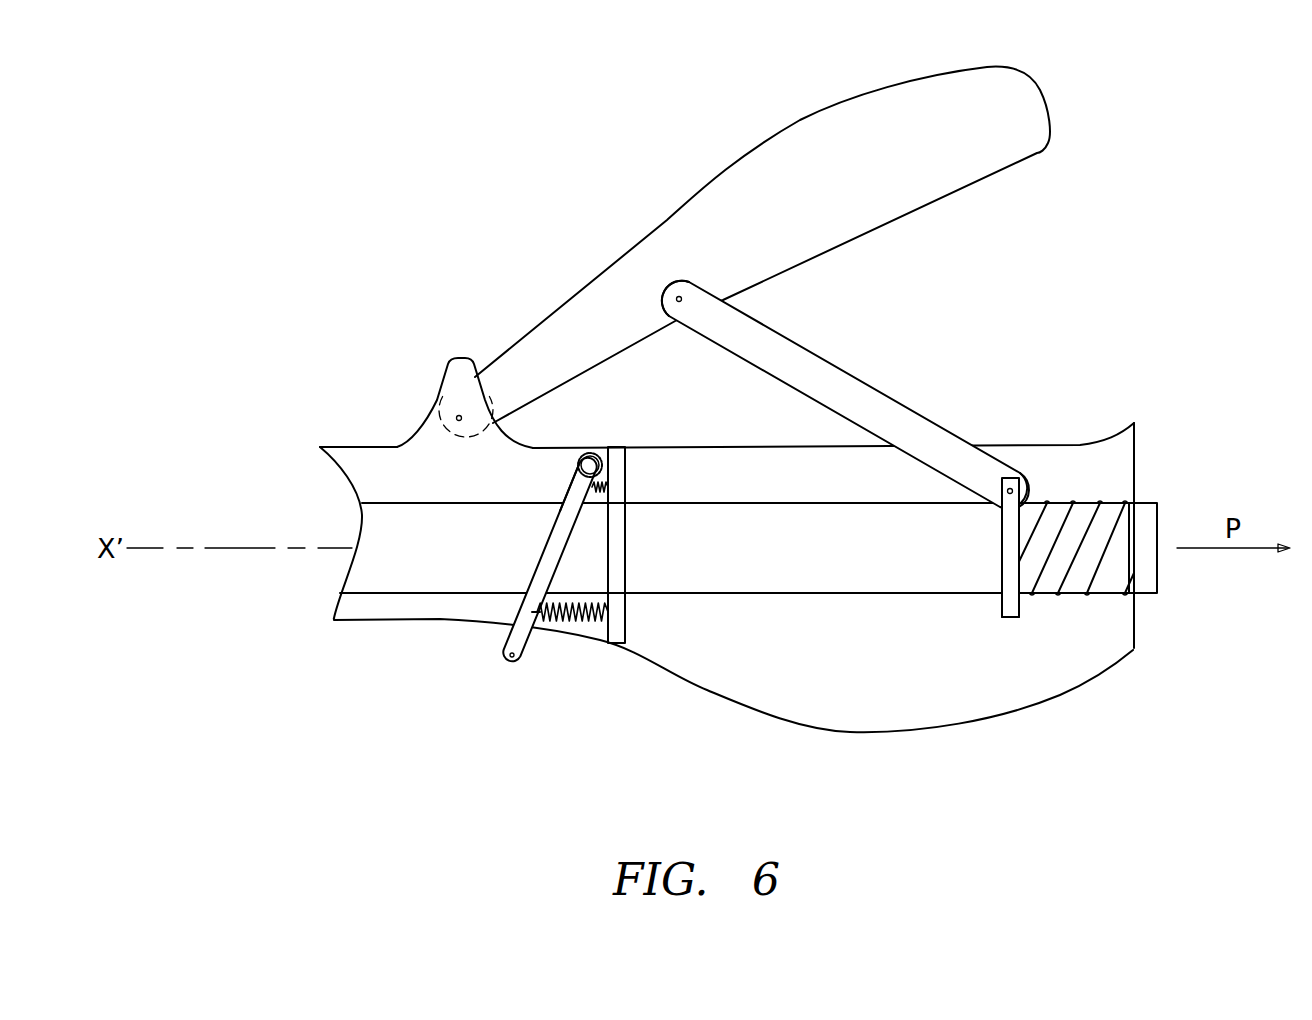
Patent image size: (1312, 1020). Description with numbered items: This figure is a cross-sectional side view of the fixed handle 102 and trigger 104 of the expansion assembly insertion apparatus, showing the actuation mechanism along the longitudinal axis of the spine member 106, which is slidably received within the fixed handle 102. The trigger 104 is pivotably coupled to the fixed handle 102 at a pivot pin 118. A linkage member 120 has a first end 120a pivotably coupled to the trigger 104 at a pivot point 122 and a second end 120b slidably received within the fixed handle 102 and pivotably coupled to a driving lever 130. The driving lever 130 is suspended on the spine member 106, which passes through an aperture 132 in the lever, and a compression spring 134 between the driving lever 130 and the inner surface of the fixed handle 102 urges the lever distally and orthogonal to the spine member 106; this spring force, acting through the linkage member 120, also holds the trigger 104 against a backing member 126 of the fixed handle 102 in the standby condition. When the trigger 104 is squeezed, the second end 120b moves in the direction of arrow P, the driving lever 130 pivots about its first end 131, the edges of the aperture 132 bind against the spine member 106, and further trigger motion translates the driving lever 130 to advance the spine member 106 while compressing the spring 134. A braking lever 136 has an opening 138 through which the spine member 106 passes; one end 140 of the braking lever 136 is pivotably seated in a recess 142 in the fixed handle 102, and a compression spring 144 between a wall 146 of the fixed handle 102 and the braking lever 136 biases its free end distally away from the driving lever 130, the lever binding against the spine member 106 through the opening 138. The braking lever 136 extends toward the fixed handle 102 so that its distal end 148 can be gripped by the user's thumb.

The fixed handle 102 is at (836, 712).
The trigger 104 is at (843, 137).
The spine member 106 is at (368, 573).
The pivot pin 118 is at (458, 418).
The linkage member 120 is at (843, 383).
The first end of linkage member 120a is at (702, 302).
The second end of linkage member 120b is at (1002, 468).
The pivot point 122 is at (677, 290).
The backing member 126 is at (460, 357).
The driving lever 130 is at (1016, 617).
The first end of driving lever 131 is at (1015, 604).
The aperture 132 is at (1000, 570).
The compression spring 134 is at (1098, 503).
The braking lever 136 is at (540, 628).
The opening 138 is at (535, 586).
The end of braking lever 140 is at (574, 480).
The recess 142 is at (597, 449).
The compression spring 144 is at (612, 488).
The wall 146 is at (626, 613).
The distal end of braking lever 148 is at (510, 660).